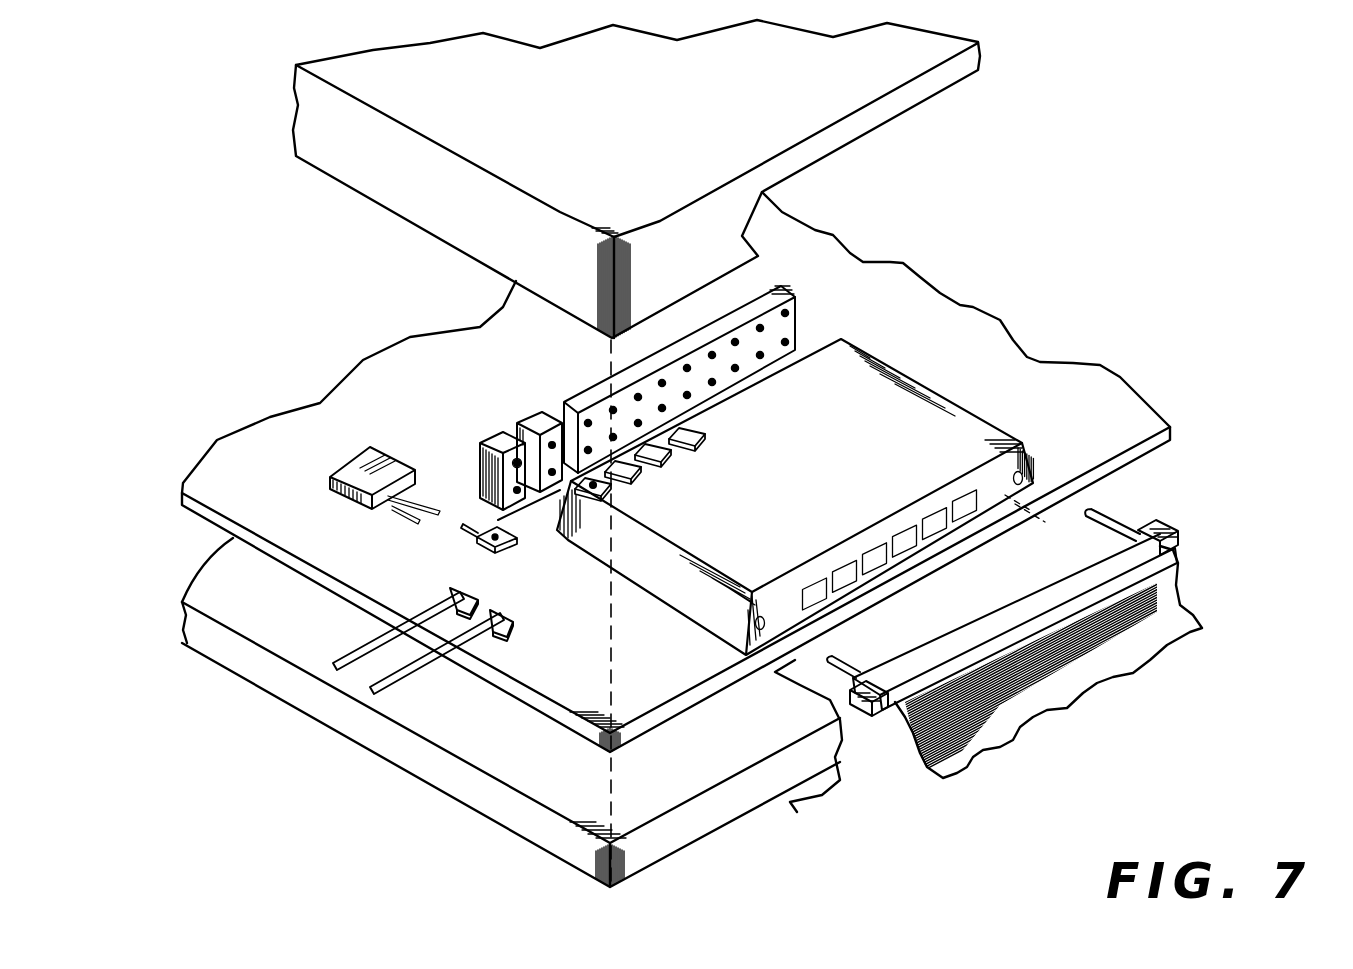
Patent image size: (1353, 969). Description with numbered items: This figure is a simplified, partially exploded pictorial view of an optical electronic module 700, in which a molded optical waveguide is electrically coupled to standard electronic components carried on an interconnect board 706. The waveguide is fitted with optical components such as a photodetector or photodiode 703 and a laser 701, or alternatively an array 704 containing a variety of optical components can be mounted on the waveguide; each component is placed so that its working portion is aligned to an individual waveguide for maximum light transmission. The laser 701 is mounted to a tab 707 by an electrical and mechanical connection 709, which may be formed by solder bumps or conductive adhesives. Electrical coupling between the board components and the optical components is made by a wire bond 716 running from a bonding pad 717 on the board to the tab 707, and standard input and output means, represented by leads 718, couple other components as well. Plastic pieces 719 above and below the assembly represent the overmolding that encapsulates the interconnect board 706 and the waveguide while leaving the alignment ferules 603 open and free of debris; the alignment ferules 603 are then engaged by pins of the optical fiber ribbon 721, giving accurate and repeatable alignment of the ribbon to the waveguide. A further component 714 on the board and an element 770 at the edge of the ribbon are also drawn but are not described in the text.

The optical electronic module 700 is at (1046, 229).
The plastic pieces 719 is at (982, 52).
The interconnect board 706 is at (1027, 357).
The array 704 is at (795, 296).
The photodetector or photodiode 703 is at (541, 412).
The laser 701 is at (502, 437).
The electrical and mechanical connection 709 is at (516, 460).
The tab 707 is at (603, 497).
The alignment ferules 603 is at (1012, 477).
The transistor package 714 is at (348, 496).
The wire bond 716 is at (520, 516).
The bonding pad 717 is at (480, 552).
The leads 718 is at (470, 643).
The edge connector bar 770 is at (1107, 517).
The optical fiber ribbon 721 is at (1010, 608).